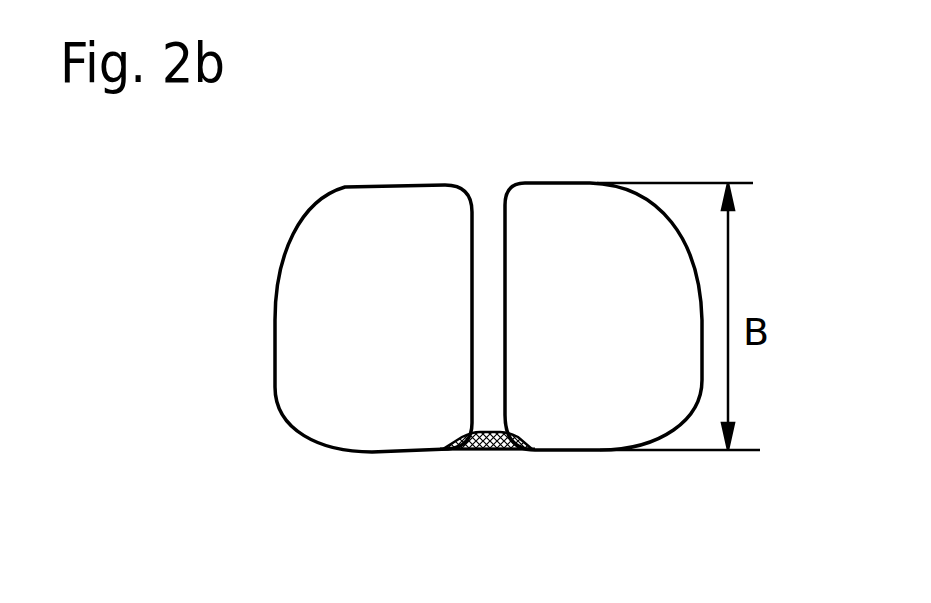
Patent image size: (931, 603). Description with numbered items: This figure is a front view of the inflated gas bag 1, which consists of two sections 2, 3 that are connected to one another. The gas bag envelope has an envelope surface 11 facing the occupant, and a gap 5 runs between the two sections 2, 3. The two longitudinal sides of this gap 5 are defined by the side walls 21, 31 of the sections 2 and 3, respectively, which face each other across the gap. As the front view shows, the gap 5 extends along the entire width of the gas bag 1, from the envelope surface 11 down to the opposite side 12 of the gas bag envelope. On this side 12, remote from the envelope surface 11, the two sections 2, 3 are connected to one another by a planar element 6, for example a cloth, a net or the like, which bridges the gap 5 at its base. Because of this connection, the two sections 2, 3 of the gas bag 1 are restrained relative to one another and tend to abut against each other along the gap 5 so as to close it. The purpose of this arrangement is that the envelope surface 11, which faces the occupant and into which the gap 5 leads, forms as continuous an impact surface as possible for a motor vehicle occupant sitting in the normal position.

The gas bag 1 is at (448, 139).
The section 2 is at (305, 328).
The section 3 is at (633, 375).
The gap 5 is at (487, 263).
The planar element 6 is at (480, 450).
The envelope surface 11 is at (372, 187).
The opposite side 12 is at (368, 453).
The side wall 21 is at (472, 288).
The side wall 31 is at (505, 258).